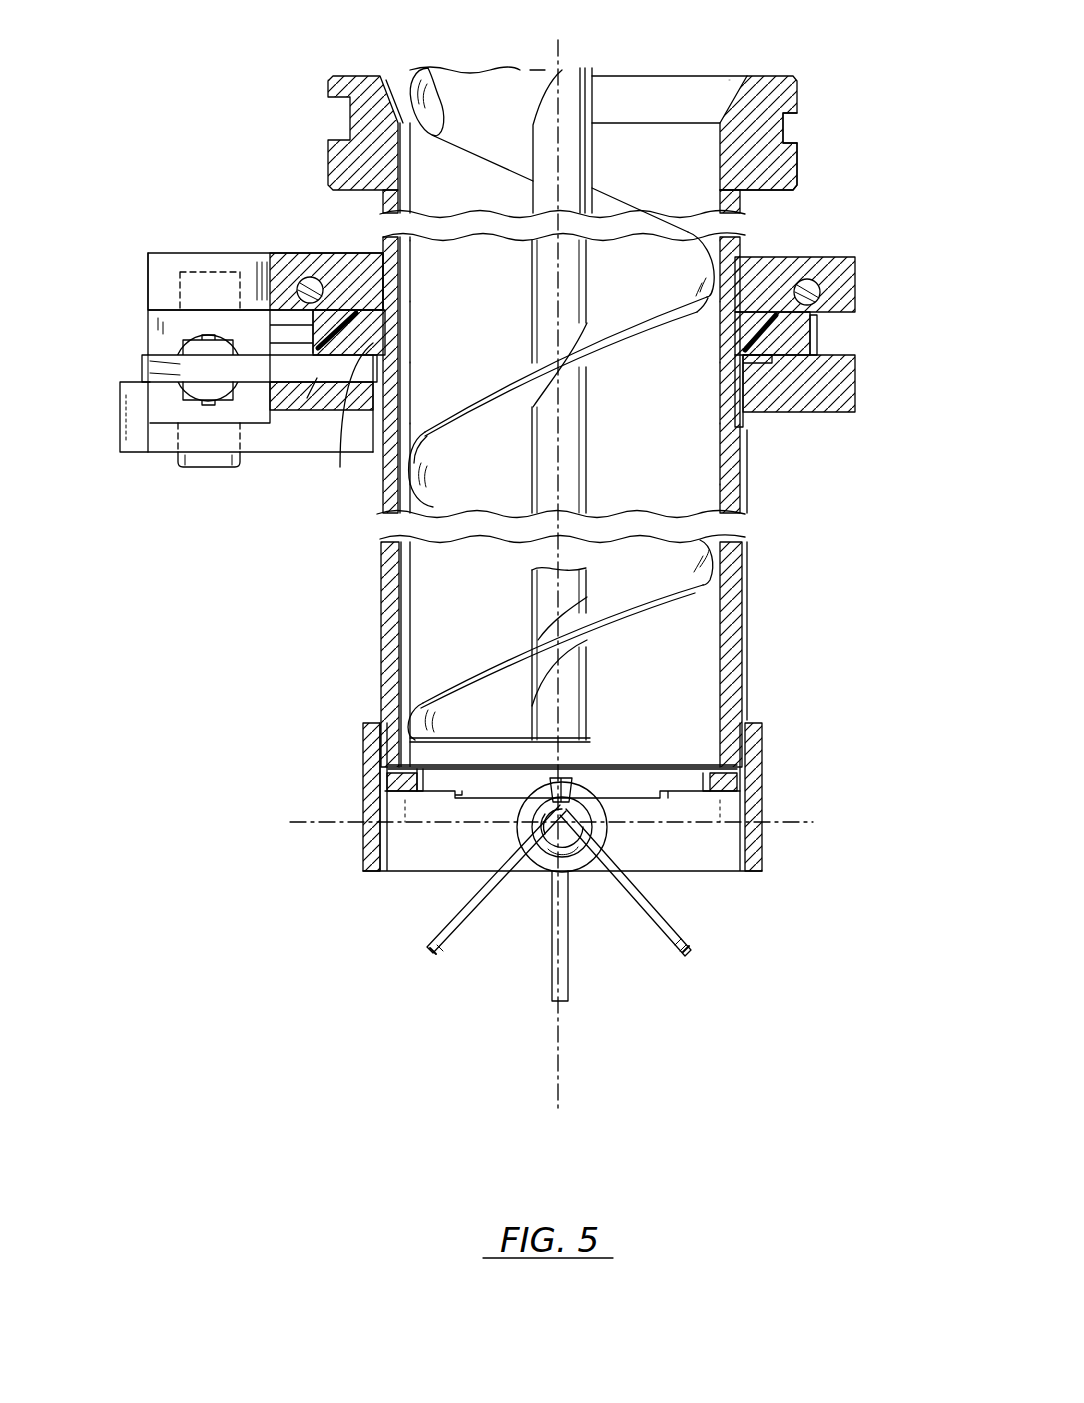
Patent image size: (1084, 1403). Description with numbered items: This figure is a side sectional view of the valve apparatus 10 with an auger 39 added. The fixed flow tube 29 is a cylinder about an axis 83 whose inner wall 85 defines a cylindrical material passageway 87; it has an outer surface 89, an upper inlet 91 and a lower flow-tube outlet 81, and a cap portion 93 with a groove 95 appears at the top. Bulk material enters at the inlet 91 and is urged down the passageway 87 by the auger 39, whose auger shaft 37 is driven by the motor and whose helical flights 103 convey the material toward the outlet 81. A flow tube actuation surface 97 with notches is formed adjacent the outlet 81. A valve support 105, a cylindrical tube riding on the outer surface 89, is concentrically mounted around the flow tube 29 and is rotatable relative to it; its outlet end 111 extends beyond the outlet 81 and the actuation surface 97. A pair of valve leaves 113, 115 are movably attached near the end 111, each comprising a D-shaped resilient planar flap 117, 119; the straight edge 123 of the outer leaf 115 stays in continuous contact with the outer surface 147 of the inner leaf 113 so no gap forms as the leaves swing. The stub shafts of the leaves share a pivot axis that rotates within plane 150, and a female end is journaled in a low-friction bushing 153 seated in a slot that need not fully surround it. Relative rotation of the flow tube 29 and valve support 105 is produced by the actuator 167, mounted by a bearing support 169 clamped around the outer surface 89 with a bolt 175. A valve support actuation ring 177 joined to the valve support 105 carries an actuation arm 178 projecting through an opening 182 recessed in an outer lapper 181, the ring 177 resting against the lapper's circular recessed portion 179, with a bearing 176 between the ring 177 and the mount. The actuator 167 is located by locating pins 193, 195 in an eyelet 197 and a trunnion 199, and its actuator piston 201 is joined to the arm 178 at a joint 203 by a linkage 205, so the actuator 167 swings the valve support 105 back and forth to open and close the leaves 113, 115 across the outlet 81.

The apparatus 10 is at (254, 160).
The flow tube 29 is at (730, 573).
The auger shaft 37 is at (593, 101).
The auger 39 is at (703, 250).
The flow-tube outlet 81 is at (661, 815).
The axis 83 is at (558, 1038).
The inner wall 85 is at (712, 671).
The material passageway 87 is at (676, 419).
The outer surface 89 is at (737, 493).
The upper inlet 91 is at (713, 92).
The cap lower portion 93 is at (797, 158).
The cap groove 95 is at (782, 112).
The flow tube actuation surface 97 is at (575, 784).
The helical flights 103 is at (427, 137).
The valve support 105 is at (743, 633).
The outlet end 111 is at (730, 873).
The inner valve leaf 113 is at (426, 938).
The outer valve leaf 115 is at (708, 942).
The planar flap 117 is at (440, 928).
The planar flap 119 is at (682, 935).
The straight edge 123 is at (312, 278).
The outer surface 147 is at (553, 847).
The plane 150 is at (817, 823).
The bushing 153 is at (518, 828).
The actuator 167 is at (147, 325).
The bearing support 169 is at (857, 261).
The bolt 175 is at (820, 292).
The bearing 176 is at (810, 313).
The valve support actuation ring 177 is at (863, 422).
The actuation arm 178 is at (147, 367).
The circular recessed portion 179 is at (814, 338).
The outer lapper 181 is at (847, 393).
The opening 182 is at (305, 405).
The locating pin 193 is at (200, 253).
The locating pin 195 is at (183, 465).
The eyelet 197 is at (152, 253).
The trunnion 199 is at (130, 438).
The actuator piston 201 is at (135, 347).
The joint 203 is at (210, 335).
The linkage 205 is at (185, 386).